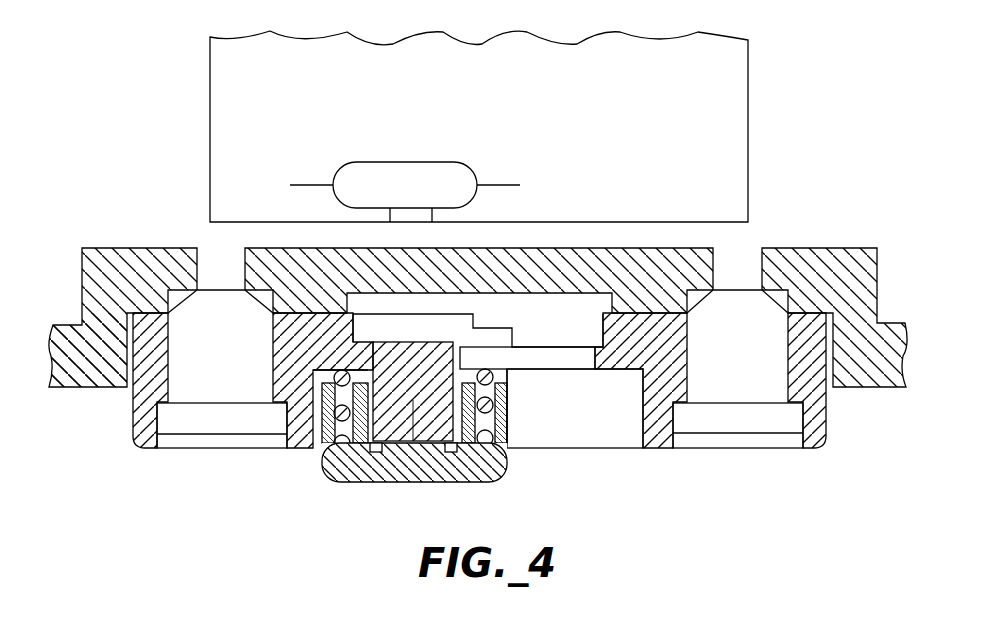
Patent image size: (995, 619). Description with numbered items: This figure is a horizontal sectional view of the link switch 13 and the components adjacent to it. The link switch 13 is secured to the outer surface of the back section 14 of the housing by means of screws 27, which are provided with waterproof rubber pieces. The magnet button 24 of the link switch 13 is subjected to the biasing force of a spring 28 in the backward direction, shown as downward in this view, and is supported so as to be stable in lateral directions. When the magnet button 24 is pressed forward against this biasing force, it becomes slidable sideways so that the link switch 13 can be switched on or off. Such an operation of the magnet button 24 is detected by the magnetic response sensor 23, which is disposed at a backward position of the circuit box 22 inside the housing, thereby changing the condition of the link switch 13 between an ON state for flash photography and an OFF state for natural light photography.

The link switch 13 is at (300, 444).
The back section 14 is at (97, 388).
The circuit box 22 is at (263, 53).
The magnetic response sensor 23 is at (390, 160).
The magnet button 24 is at (400, 483).
The screws 27 is at (170, 247).
The spring 28 is at (503, 407).